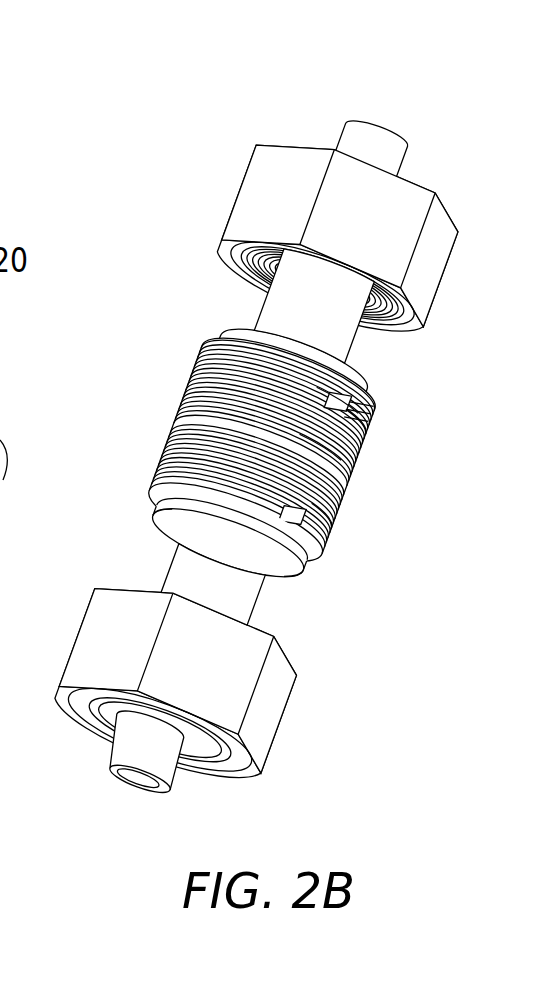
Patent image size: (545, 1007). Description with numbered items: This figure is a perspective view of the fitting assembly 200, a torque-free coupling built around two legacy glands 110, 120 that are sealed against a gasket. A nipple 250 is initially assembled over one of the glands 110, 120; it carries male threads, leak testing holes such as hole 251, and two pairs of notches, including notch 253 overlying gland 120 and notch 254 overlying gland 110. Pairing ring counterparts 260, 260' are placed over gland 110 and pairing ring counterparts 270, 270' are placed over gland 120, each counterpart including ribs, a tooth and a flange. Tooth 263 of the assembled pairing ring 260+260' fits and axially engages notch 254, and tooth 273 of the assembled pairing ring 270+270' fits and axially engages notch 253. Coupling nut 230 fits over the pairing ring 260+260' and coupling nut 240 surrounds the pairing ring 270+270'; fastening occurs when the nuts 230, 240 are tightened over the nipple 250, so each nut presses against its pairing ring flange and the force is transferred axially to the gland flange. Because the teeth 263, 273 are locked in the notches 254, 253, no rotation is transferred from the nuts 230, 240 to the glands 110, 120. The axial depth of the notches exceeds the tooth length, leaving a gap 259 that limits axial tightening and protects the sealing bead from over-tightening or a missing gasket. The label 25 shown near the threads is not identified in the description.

The fitting assembly 200 is at (270, 72).
The gland 110 is at (140, 777).
The gland 120 is at (387, 130).
The coupling nut 240 is at (257, 210).
The coupling nut 230 is at (255, 722).
The nipple 250 is at (190, 450).
The pairing ring counterpart 270' is at (260, 327).
The pairing ring counterpart 270 is at (421, 416).
The tooth 273 is at (336, 400).
The notch 253 is at (333, 415).
The thread crest 25 is at (347, 418).
The leak testing hole 251 is at (315, 460).
The gap 259 is at (297, 507).
The notch 254 is at (308, 523).
The tooth 263 is at (307, 520).
The pairing ring counterpart 260 is at (250, 569).
The pairing ring counterpart 260' is at (134, 541).